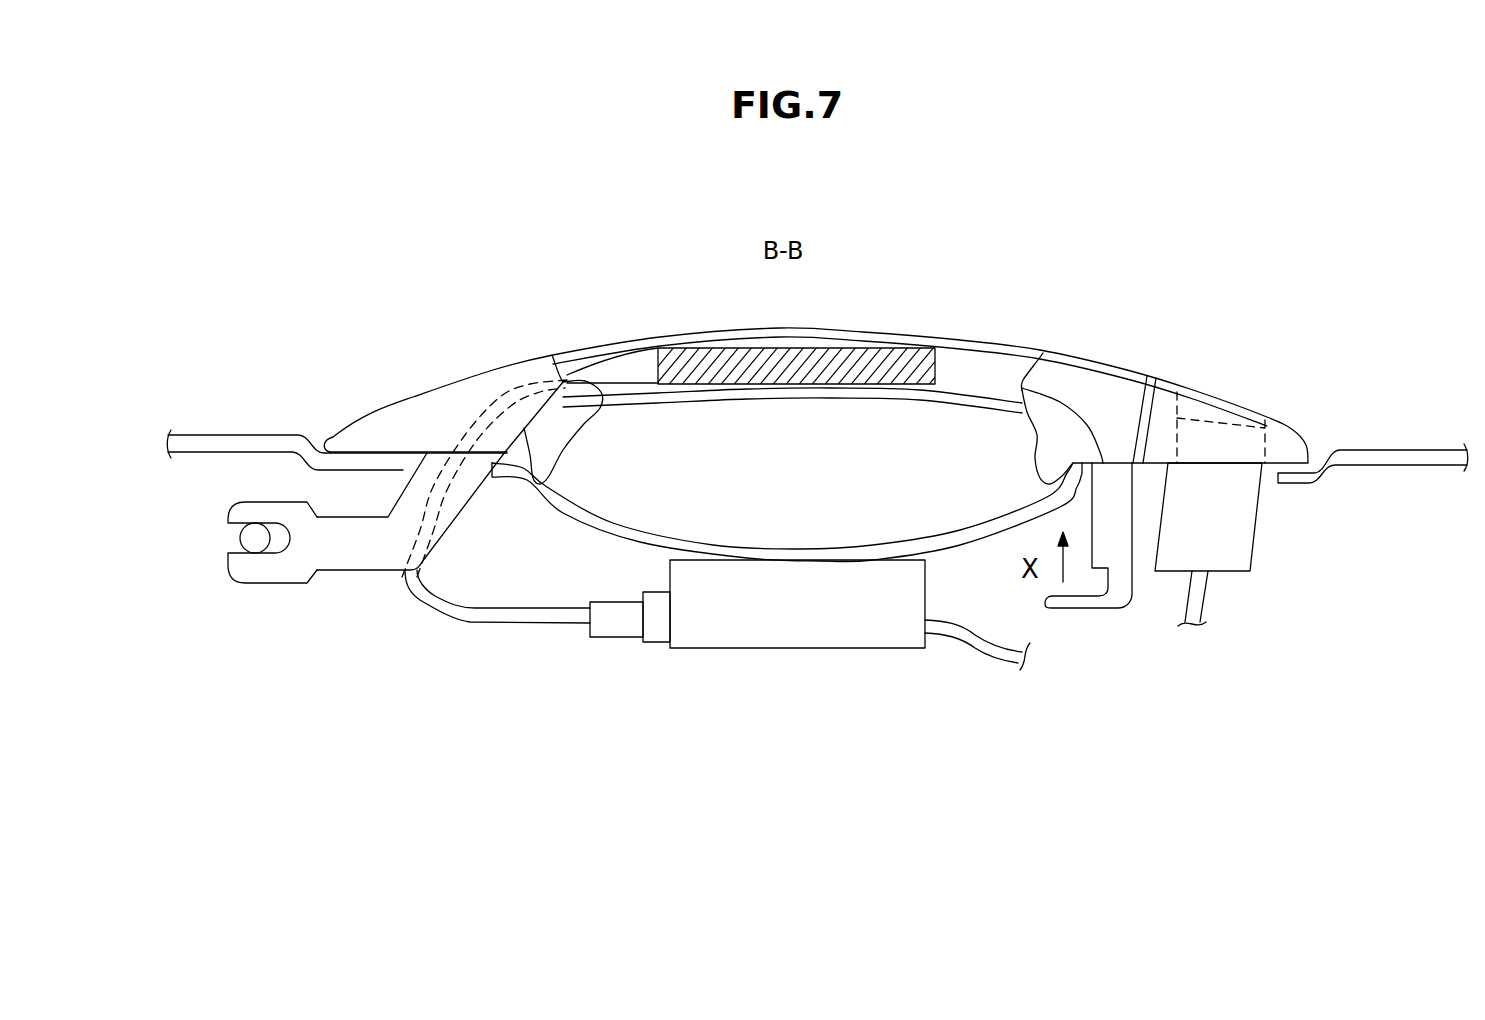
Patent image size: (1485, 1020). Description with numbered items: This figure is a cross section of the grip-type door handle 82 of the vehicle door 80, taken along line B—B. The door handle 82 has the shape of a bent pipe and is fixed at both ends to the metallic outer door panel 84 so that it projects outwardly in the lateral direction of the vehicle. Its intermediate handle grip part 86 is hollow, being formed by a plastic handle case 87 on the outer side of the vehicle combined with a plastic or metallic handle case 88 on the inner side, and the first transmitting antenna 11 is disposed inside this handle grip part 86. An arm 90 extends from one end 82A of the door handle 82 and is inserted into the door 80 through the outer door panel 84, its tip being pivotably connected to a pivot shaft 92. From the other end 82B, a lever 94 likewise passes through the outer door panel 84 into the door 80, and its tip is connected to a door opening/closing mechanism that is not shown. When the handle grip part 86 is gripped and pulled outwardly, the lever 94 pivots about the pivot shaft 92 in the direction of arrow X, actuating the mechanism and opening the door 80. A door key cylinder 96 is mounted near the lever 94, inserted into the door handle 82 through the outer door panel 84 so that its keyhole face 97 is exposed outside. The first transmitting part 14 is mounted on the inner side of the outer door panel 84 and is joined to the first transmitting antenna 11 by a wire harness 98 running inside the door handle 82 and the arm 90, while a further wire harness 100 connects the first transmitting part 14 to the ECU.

The door 80 is at (262, 424).
The door handle 82 is at (463, 370).
The one end of the door handle 82A is at (405, 440).
The other end of the door handle 82B is at (1117, 414).
The outer door panel 84 is at (205, 434).
The handle grip part 86 is at (612, 343).
The handle case 87 is at (970, 346).
The handle case 88 is at (960, 406).
The first transmitting antenna 11 is at (873, 358).
The arm 90 is at (352, 565).
The pivot shaft 92 is at (237, 547).
The lever 94 is at (1120, 563).
The door key cylinder 96 is at (1262, 538).
The key hole 97 is at (1222, 420).
The wire harness 98 is at (523, 627).
The first transmitting part 14 is at (830, 628).
The wire harness 100 is at (980, 643).